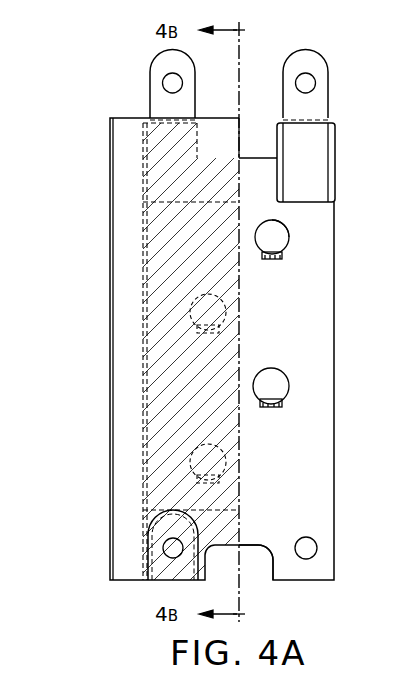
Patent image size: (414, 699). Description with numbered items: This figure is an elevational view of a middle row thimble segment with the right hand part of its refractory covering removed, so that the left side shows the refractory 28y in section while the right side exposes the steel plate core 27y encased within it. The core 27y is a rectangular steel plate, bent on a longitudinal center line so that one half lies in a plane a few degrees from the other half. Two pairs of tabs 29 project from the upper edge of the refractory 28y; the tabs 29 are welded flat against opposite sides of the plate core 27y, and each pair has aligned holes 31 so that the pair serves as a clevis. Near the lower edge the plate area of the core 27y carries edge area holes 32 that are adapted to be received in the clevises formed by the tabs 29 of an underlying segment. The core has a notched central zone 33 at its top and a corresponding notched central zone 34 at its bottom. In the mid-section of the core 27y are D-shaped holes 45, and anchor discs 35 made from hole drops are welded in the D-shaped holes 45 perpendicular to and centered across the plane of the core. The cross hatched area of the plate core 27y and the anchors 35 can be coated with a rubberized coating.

The tab 29 is at (152, 62).
The hole 31 is at (303, 78).
The notched central zone 33 is at (277, 158).
The D-shaped hole 45 is at (279, 226).
The anchor disc 35 is at (290, 243).
The refractory 28y is at (130, 325).
The steel plate core 27y is at (300, 355).
The edge area hole 32 is at (305, 545).
The notched central zone 34 is at (262, 552).